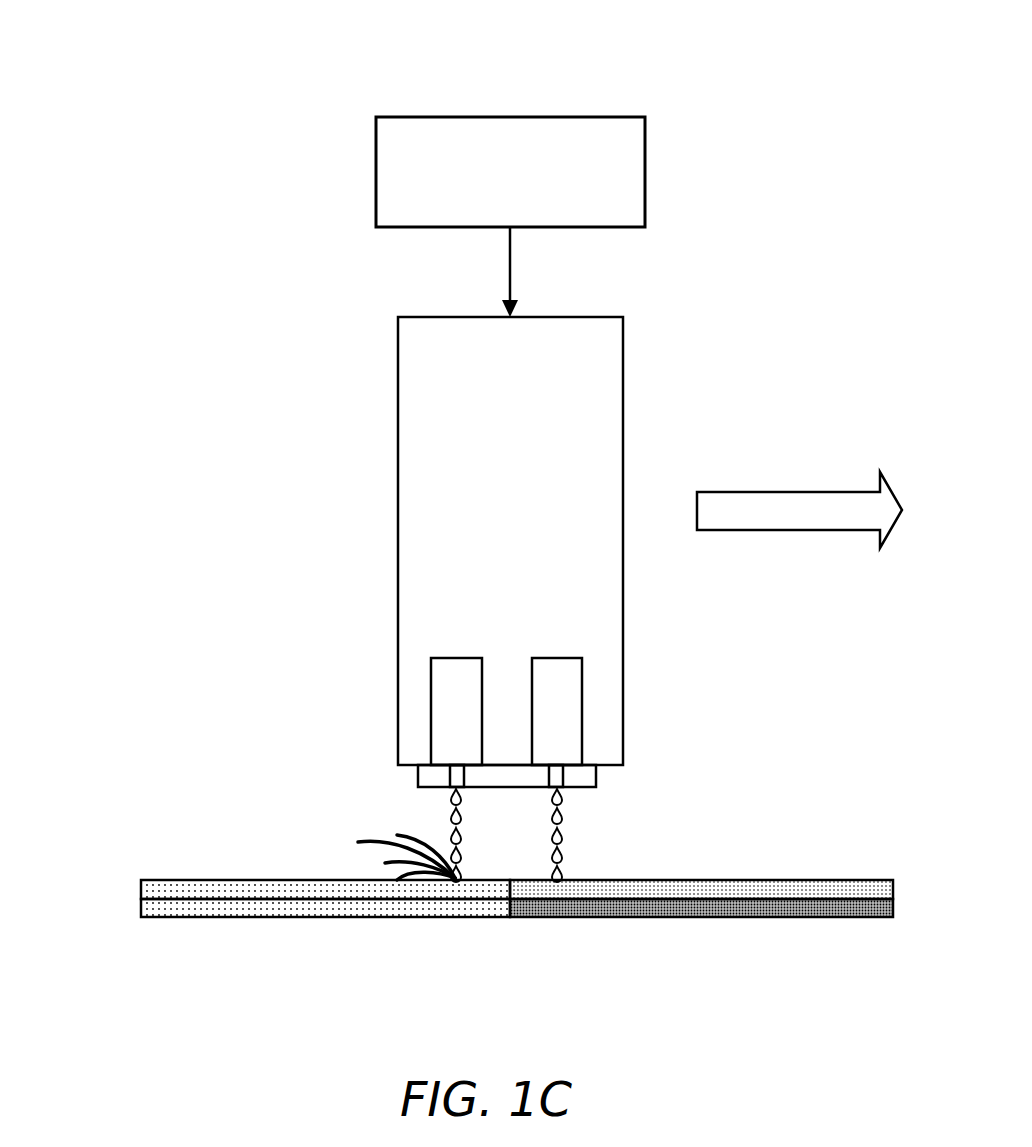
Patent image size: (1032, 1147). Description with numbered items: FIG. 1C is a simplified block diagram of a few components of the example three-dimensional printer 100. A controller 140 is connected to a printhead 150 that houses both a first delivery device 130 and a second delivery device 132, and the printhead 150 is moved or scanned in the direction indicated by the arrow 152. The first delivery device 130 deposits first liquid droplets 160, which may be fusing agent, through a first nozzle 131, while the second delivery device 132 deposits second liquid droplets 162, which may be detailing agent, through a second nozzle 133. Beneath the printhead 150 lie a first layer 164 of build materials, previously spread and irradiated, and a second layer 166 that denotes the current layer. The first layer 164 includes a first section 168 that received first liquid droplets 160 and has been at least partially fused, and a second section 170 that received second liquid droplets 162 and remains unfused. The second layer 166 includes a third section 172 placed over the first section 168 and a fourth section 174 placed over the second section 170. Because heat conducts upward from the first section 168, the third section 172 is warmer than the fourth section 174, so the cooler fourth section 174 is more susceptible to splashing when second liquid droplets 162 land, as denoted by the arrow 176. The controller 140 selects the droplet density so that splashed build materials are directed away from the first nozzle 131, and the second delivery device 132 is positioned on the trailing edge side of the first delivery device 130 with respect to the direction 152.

The 3D printer 100 is at (510, 30).
The controller 140 is at (510, 217).
The printhead 150 is at (397, 389).
The direction of printhead movement 152 is at (812, 492).
The first delivery device 130 is at (582, 705).
The first nozzle 131 is at (564, 775).
The second delivery device 132 is at (431, 690).
The second nozzle 133 is at (449, 774).
The first liquid droplets 160 is at (562, 833).
The second liquid droplets 162 is at (452, 812).
The first layer 164 is at (468, 903).
The second layer 166 is at (476, 861).
The first section 168 is at (617, 917).
The second section 170 is at (295, 917).
The third section 172 is at (742, 880).
The fourth section 174 is at (246, 879).
The splashing 176 is at (348, 851).